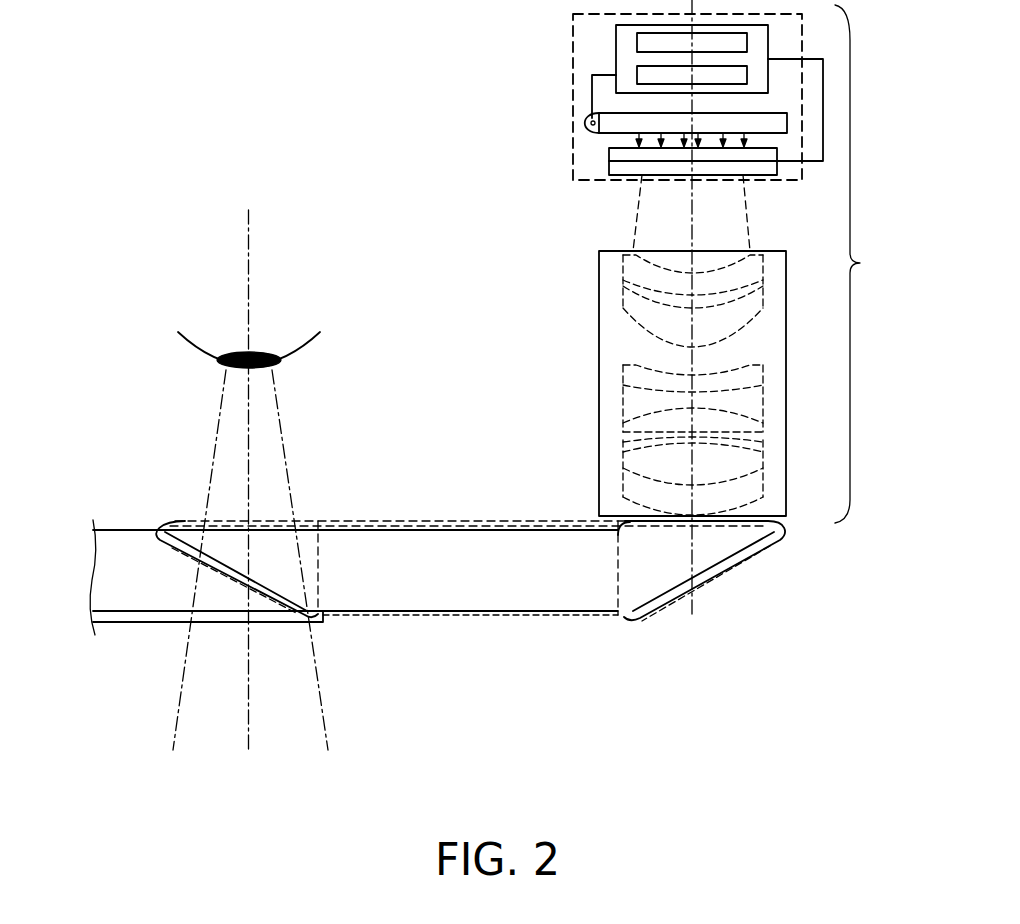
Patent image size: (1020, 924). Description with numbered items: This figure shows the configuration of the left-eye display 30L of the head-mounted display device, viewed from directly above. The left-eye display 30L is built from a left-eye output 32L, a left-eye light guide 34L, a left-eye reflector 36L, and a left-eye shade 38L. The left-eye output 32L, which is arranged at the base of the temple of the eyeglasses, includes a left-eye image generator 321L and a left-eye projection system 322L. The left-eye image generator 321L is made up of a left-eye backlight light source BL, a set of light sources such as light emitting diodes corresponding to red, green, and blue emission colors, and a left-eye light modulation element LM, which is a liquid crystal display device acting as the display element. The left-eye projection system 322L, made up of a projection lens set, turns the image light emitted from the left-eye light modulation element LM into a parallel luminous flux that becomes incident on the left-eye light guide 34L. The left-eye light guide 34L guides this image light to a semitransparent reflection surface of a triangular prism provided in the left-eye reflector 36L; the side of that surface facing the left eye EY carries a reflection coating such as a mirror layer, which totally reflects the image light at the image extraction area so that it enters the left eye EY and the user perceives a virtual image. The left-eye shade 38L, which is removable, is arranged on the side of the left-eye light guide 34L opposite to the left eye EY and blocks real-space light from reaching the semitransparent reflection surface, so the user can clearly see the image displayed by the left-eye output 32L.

The left-eye display 30L is at (465, 614).
The left-eye output 32L is at (687, 264).
The left-eye image generator 321L is at (651, 116).
The left-eye projection system 322L is at (578, 366).
The left-eye backlight light source BL is at (583, 124).
The left-eye light modulation element LM is at (768, 168).
The left eye EY is at (192, 350).
The left-eye light guide 34L is at (488, 626).
The left-eye reflector 36L is at (238, 583).
The left-eye shade 38L is at (280, 623).